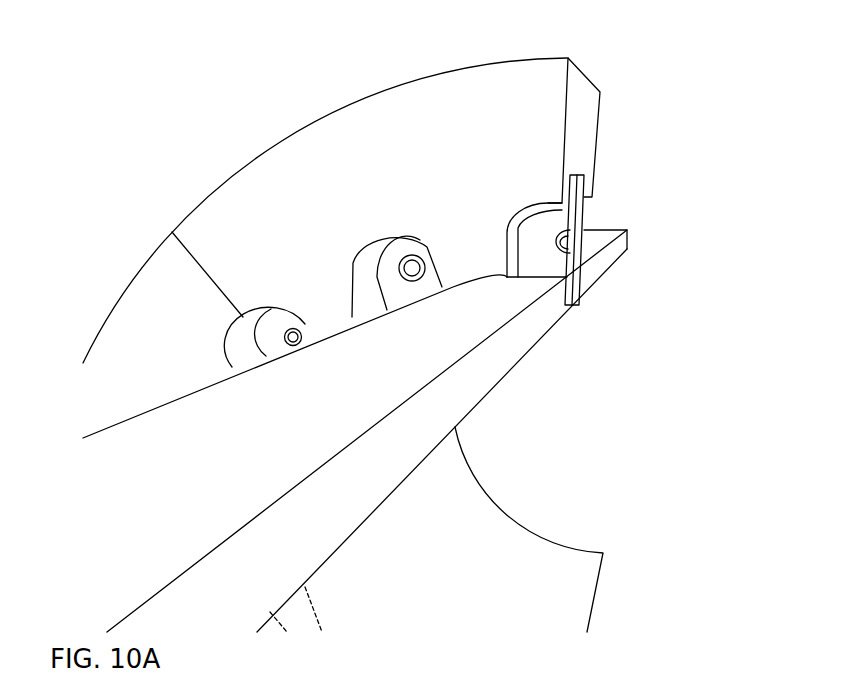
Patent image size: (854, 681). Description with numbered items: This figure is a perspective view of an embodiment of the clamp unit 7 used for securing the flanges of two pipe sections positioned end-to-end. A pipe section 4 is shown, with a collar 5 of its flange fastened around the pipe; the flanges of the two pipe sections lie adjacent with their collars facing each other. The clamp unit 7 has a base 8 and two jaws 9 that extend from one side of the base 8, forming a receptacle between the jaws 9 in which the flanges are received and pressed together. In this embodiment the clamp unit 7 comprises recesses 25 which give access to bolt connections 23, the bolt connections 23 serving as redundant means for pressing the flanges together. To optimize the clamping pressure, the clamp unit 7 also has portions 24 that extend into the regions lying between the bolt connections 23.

The pipe section 4 is at (513, 352).
The collar 5 is at (587, 220).
The clamp unit 7 is at (360, 128).
The base 8 is at (578, 145).
The jaw 9 is at (595, 183).
The bolt connection 23 is at (403, 258).
The portion 24 is at (482, 265).
The recess 25 is at (538, 252).